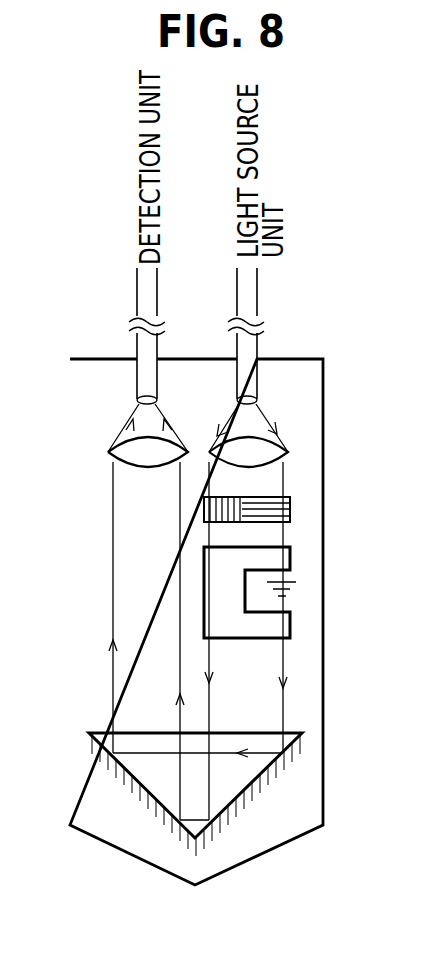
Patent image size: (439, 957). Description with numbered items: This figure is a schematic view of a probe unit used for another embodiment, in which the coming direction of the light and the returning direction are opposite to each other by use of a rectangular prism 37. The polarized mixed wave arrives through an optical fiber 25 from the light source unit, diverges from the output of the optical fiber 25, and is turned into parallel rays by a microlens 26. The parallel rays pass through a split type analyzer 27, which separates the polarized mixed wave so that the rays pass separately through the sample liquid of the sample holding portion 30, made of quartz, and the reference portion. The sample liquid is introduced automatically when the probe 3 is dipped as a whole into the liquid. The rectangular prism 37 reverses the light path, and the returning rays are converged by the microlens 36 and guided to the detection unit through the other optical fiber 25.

The probe 3 is at (147, 835).
The optical fiber 25 is at (143, 348).
The microlens 26 is at (257, 458).
The split type analyzer 27 is at (290, 508).
The sample holding portion 30 is at (273, 560).
The microlens 36 is at (133, 458).
The rectangular prism 37 is at (302, 742).